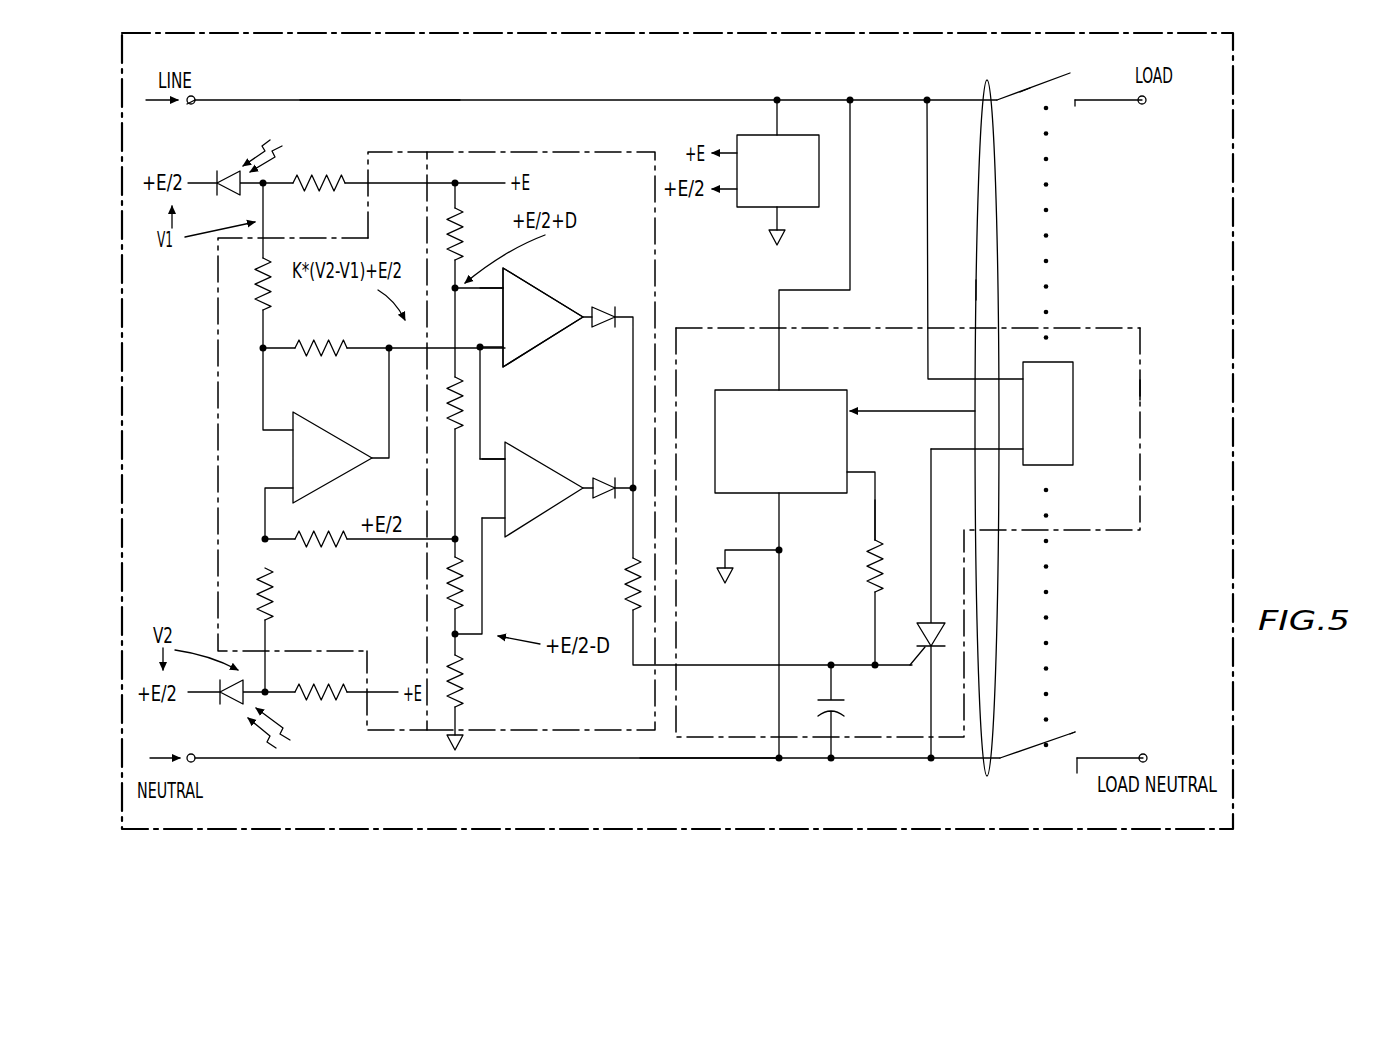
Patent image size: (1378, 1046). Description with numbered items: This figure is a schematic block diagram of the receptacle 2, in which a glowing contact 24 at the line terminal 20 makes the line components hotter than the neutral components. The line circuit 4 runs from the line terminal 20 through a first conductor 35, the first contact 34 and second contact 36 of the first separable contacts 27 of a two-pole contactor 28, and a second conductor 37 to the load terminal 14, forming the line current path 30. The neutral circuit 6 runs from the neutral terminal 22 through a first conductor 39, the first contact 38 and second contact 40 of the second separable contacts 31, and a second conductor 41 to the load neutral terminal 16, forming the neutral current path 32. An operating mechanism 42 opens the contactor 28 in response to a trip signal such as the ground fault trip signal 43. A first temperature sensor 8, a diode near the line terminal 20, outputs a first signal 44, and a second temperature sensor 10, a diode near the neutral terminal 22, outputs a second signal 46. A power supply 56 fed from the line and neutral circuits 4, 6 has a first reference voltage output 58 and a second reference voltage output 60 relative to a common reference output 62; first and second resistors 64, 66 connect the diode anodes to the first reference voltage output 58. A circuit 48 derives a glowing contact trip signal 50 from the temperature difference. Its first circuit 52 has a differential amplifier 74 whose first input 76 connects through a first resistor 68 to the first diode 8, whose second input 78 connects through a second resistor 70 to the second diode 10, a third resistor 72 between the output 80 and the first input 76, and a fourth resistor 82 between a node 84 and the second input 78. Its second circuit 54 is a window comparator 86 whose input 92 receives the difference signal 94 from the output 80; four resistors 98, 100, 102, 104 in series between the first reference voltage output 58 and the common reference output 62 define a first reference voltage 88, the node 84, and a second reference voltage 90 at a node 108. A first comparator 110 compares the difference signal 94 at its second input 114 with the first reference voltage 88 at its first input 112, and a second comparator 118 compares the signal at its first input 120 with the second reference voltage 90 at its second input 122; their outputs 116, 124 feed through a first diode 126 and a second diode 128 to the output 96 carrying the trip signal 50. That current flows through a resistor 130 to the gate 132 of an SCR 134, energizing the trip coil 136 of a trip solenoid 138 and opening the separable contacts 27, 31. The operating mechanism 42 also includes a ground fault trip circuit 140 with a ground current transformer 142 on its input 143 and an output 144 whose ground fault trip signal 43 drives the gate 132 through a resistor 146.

The receptacle 2 is at (1236, 208).
The line circuit 4 is at (154, 101).
The neutral circuit 6 is at (158, 757).
The first temperature sensor 8 is at (230, 173).
The second temperature sensor 10 is at (236, 700).
The load terminal 14 is at (1146, 104).
The load neutral terminal 16 is at (1146, 754).
The line terminal 20 is at (194, 98).
The neutral terminal 22 is at (193, 763).
The glowing contact 24 is at (188, 110).
The first separable contacts 27 is at (1030, 92).
The two-pole contactor 28 is at (1033, 72).
The line current path 30 is at (572, 100).
The second separable contacts 31 is at (1064, 736).
The neutral current path 32 is at (415, 760).
The first contact 34 is at (1072, 76).
The first conductor 35 is at (452, 96).
The second contact 36 is at (1075, 106).
The second conductor 37 is at (1128, 104).
The first contact 38 is at (1076, 732).
The first conductor 39 is at (703, 764).
The second contact 40 is at (1077, 778).
The second conductor 41 is at (1125, 755).
The operating mechanism 42 is at (1142, 390).
The ground fault trip signal 43 is at (873, 510).
The first signal 44 is at (266, 221).
The second signal 46 is at (268, 668).
The circuit 48 is at (212, 328).
The glowing contact trip signal 50 is at (632, 545).
The first circuit 52 is at (396, 148).
The second circuit 54 is at (497, 149).
The power supply 56 is at (785, 136).
The first reference voltage output 58 is at (734, 148).
The second reference voltage output 60 is at (734, 195).
The common reference output 62 is at (790, 220).
The first resistor 64 is at (308, 180).
The second resistor 66 is at (320, 702).
The first resistor 68 is at (270, 293).
The second resistor 70 is at (275, 598).
The third resistor 72 is at (320, 346).
The differential amplifier 74 is at (310, 420).
The first input 76 is at (286, 433).
The second input 78 is at (286, 487).
The output 80 is at (378, 457).
The fourth resistor 82 is at (333, 548).
The node 84 is at (452, 536).
The window comparator 86 is at (578, 272).
The first reference voltage 88 is at (474, 287).
The second reference voltage 90 is at (484, 582).
The input 92 is at (472, 355).
The difference signal 94 is at (483, 410).
The output 96 is at (632, 495).
The resistor 98 is at (462, 226).
The resistor 100 is at (450, 398).
The resistor 102 is at (450, 583).
The resistor 104 is at (465, 694).
The node 108 is at (462, 640).
The first comparator 110 is at (520, 289).
The first input 112 is at (500, 291).
The second input 114 is at (500, 346).
The output 116 is at (584, 324).
The second comparator 118 is at (517, 452).
The first input 120 is at (500, 462).
The second input 122 is at (500, 517).
The output 124 is at (584, 496).
The first diode 126 is at (600, 311).
The second diode 128 is at (605, 478).
The resistor 130 is at (630, 590).
The gate 132 is at (912, 668).
The SCR 134 is at (930, 621).
The trip coil 136 is at (1075, 455).
The trip solenoid 138 is at (1095, 350).
The ground fault trip circuit 140 is at (757, 386).
The ground current transformer 142 is at (964, 288).
The input 143 is at (851, 406).
The output 144 is at (851, 471).
The resistor 146 is at (872, 566).